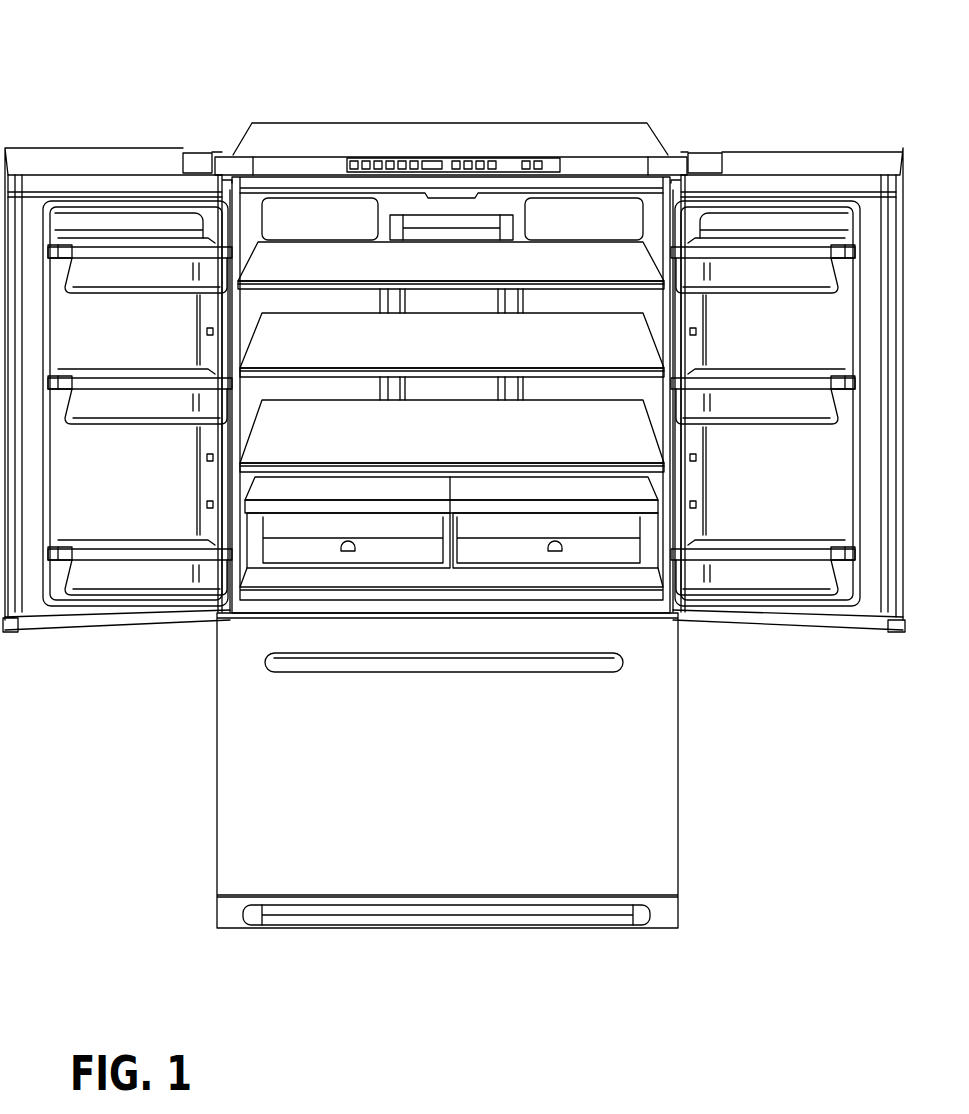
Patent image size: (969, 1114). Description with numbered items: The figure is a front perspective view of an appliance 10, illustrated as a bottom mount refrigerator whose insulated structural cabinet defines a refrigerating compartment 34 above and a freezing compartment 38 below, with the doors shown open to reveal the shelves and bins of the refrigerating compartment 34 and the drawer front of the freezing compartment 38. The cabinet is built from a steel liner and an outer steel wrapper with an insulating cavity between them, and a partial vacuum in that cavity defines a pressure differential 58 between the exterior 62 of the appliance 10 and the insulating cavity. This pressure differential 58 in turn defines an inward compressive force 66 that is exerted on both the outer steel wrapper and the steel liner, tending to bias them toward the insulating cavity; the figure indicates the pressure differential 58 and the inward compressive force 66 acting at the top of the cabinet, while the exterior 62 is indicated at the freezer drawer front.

The appliance 10 is at (454, 470).
The pressure differential 58 is at (356, 143).
The inward compressive force 66 is at (613, 200).
The refrigerating compartment 34 is at (435, 408).
The freezing compartment 38 is at (484, 770).
The exterior 62 is at (722, 752).